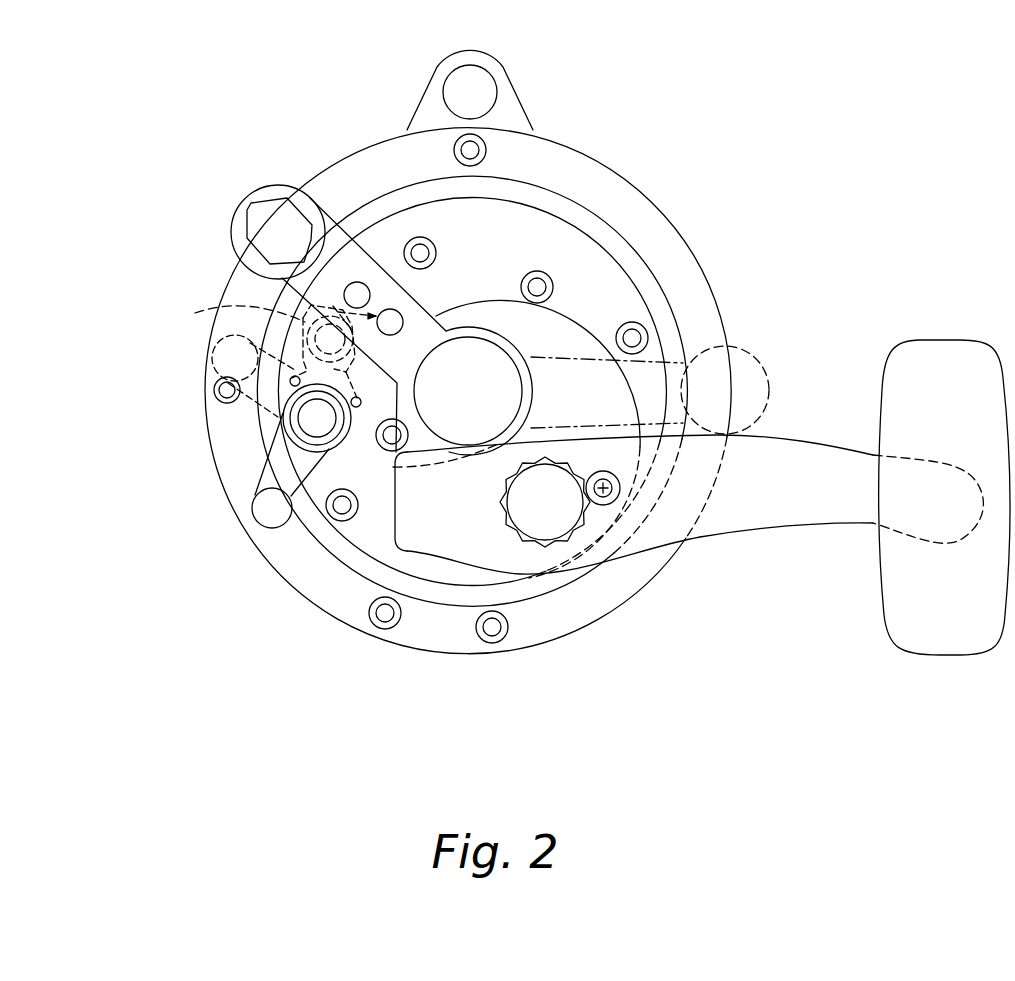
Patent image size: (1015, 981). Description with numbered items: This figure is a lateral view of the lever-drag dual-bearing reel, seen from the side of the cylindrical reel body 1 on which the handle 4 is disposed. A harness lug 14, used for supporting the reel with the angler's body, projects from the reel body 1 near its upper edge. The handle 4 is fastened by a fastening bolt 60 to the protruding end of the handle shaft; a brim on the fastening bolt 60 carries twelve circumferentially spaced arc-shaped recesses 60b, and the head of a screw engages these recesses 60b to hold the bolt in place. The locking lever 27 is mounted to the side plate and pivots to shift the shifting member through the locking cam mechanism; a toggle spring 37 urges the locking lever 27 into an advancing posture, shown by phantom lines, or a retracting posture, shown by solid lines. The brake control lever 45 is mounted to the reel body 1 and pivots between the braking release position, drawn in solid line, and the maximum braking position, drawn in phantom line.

The reel body 1 is at (698, 170).
The handle 4 is at (798, 433).
The harness lugs 14 is at (505, 104).
The locking lever 27 is at (297, 460).
The toggle spring 37 is at (197, 312).
The brake control lever 45 is at (353, 270).
The fastening bolt 60 is at (545, 520).
The arc-shaped recesses 60b is at (560, 547).